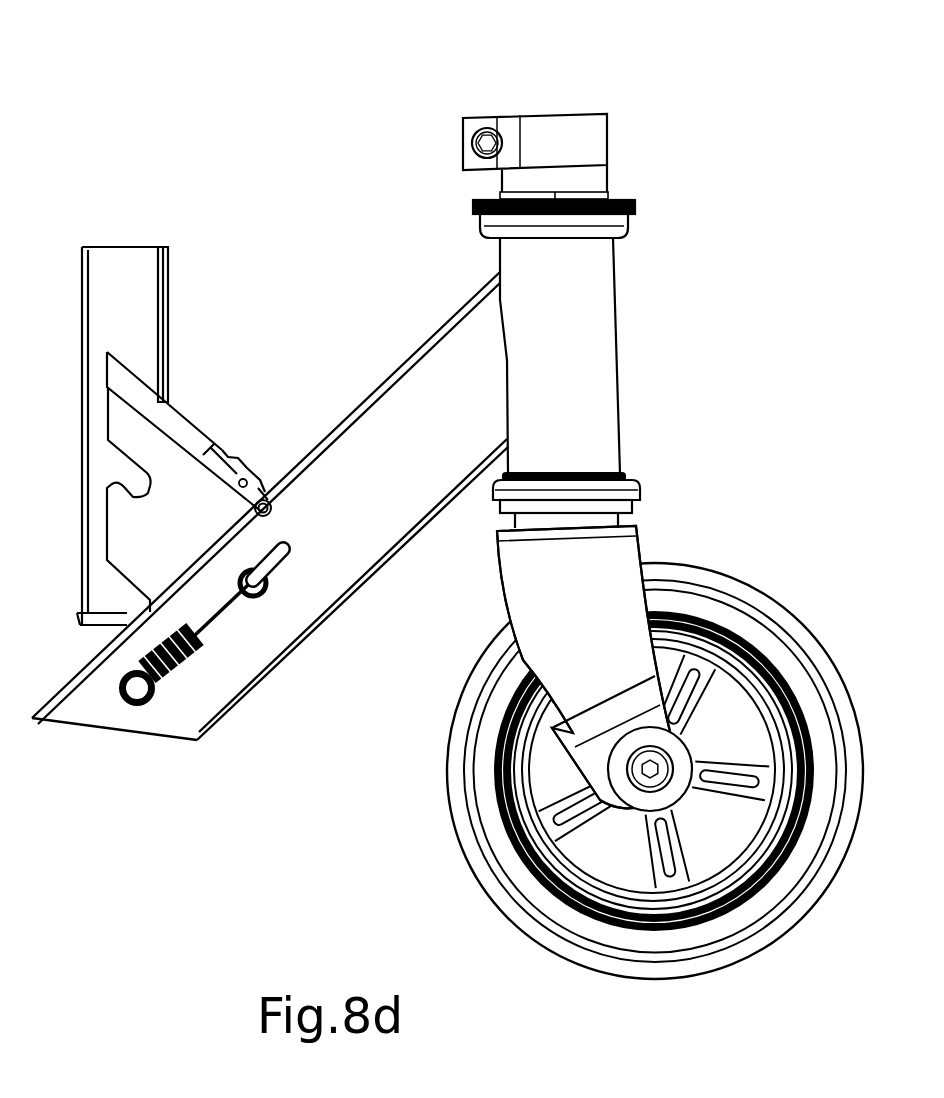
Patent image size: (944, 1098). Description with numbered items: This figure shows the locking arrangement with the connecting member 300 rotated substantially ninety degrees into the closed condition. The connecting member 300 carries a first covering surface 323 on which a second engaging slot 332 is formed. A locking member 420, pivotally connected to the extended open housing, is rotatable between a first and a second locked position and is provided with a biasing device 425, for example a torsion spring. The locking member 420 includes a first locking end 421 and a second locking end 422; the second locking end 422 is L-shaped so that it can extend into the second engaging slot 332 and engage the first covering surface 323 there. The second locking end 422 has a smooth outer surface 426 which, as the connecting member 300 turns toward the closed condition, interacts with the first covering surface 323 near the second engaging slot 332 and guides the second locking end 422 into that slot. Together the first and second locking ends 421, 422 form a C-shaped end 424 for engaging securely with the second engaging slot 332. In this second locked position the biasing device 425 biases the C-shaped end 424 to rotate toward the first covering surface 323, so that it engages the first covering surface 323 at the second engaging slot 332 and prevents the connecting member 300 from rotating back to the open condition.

The connecting member 300 is at (402, 438).
The first covering surface 323 is at (267, 508).
The second engaging slot 332 is at (266, 503).
The locking member 420 is at (240, 480).
The first locking end 421 is at (249, 487).
The second locking end 422 is at (264, 497).
The C-shaped end 424 is at (252, 497).
The biasing device 425 is at (167, 697).
The smooth outer surface 426 is at (267, 512).